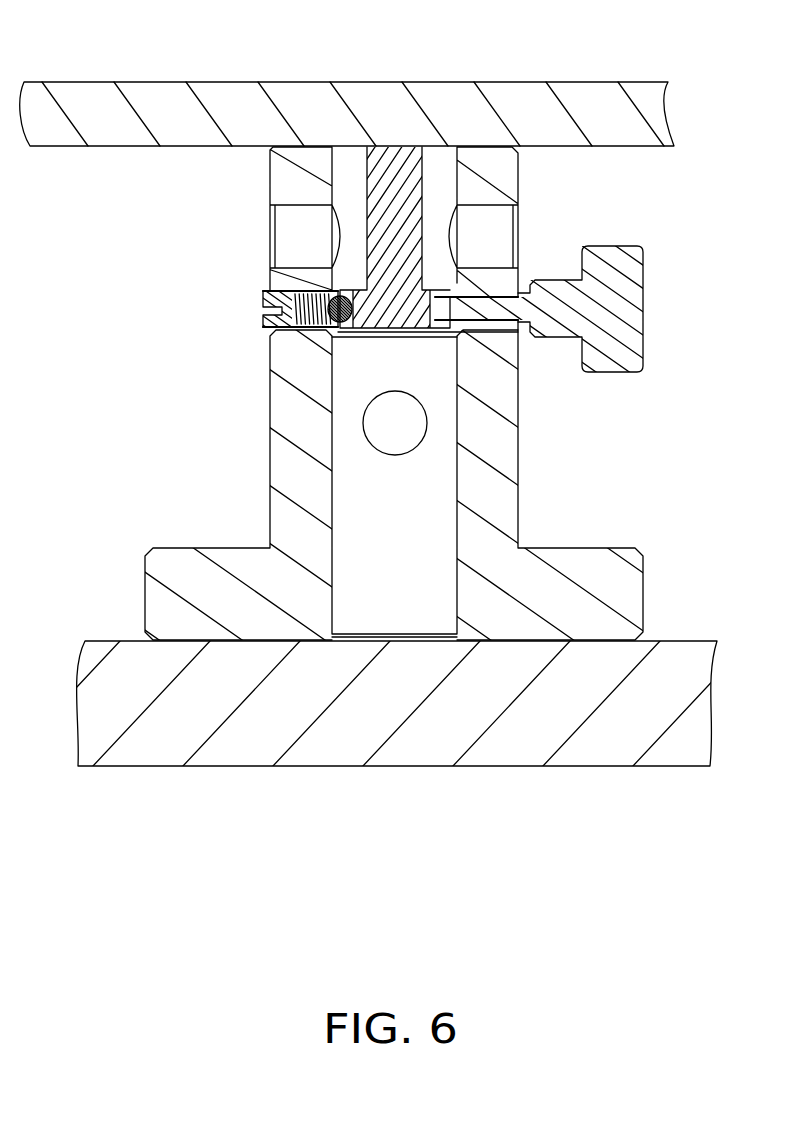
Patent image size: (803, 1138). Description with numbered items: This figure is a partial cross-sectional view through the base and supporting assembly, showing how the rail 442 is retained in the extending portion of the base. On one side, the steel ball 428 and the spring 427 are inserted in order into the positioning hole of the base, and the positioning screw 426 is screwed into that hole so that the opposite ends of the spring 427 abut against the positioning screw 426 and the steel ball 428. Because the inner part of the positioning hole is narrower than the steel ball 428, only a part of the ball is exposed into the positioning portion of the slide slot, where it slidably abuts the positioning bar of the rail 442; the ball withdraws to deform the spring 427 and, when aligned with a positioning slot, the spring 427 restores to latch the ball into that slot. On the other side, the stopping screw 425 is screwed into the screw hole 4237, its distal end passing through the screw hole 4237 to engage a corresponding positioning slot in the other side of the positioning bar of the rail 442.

The rail 442 is at (399, 178).
The stopping screw 425 is at (578, 274).
The screw hole 4237 is at (483, 298).
The positioning screw 426 is at (272, 290).
The spring 427 is at (263, 296).
The steel ball 428 is at (330, 296).